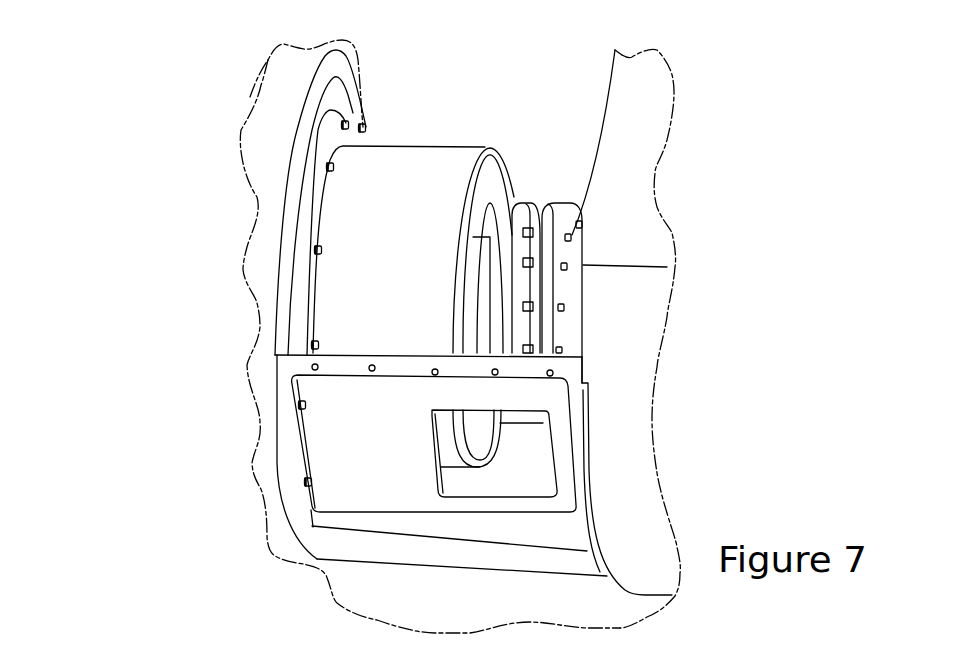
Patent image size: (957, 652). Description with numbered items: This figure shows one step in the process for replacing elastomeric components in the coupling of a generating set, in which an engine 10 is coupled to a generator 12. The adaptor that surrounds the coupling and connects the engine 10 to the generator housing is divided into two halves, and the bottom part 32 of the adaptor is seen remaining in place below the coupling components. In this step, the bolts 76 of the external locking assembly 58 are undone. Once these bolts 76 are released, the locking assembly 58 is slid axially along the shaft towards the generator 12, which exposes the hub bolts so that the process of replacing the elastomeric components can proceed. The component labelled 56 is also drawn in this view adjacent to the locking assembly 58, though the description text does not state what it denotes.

The engine 10 is at (277, 155).
The generator 12 is at (638, 242).
The bottom part 32 is at (280, 420).
The drum housing 56 is at (420, 163).
The external locking assembly 58 is at (513, 212).
The bolts 76 is at (580, 228).